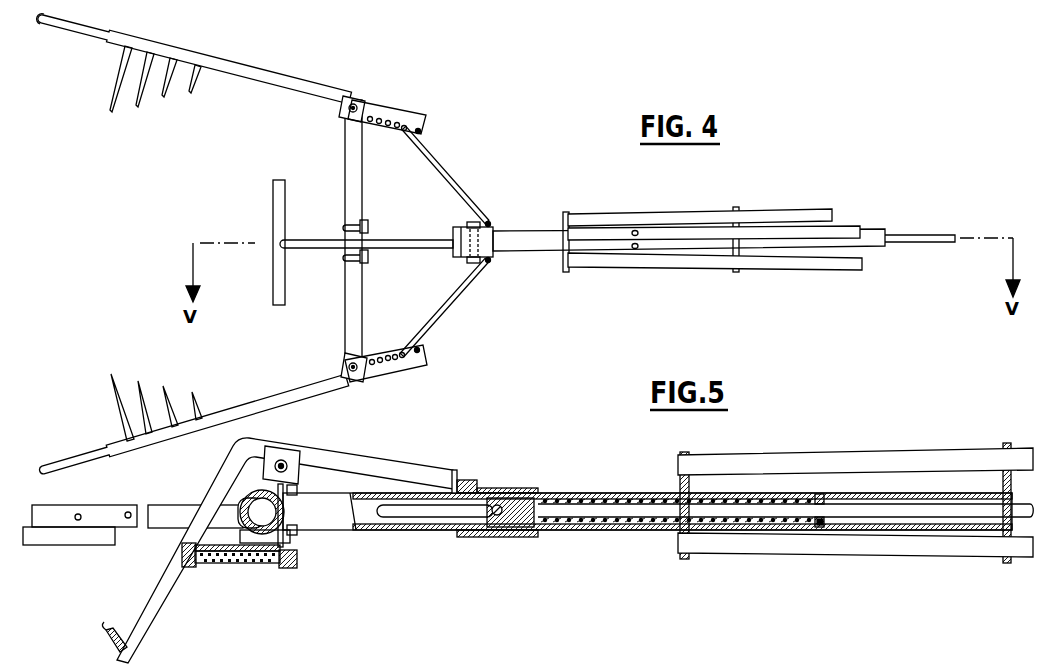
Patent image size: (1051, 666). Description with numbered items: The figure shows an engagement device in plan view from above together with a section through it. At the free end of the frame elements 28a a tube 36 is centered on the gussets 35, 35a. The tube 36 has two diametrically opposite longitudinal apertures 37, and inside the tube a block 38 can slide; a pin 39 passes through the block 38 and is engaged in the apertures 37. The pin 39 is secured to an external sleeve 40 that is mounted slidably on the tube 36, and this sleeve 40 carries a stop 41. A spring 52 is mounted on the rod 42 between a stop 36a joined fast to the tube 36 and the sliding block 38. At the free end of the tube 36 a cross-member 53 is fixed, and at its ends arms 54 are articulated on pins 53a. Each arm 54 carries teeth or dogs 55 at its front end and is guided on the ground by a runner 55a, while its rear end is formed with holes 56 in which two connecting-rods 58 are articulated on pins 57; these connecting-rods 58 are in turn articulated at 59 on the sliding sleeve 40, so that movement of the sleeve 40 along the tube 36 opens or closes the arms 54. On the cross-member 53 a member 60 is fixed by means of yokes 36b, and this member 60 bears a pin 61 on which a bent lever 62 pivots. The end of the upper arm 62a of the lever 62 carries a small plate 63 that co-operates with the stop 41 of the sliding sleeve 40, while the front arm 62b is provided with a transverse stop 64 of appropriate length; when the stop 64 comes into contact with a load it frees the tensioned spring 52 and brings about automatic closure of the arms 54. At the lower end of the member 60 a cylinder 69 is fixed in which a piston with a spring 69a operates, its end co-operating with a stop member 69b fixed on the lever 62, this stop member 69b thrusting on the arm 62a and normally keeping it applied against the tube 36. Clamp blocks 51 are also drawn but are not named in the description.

In FIG. 4, the elements 28a is at (772, 228).
In FIG. 5, the elements 28a is at (900, 465).
In FIG. 5, the gusset 35 is at (686, 455).
In FIG. 5, the gusset 35a is at (1006, 446).
In FIG. 4, the tube 36 is at (528, 243).
In FIG. 5, the tube 36 is at (317, 517).
In FIG. 5, the stop 36a is at (822, 492).
In FIG. 4, the yokes 36b is at (343, 228).
In FIG. 5, the yokes 36b is at (240, 505).
In FIG. 5, the longitudinal apertures 37 is at (420, 512).
In FIG. 5, the block 38 is at (540, 495).
In FIG. 4, the pin 39 is at (478, 227).
In FIG. 5, the pin 39 is at (500, 505).
In FIG. 4, the external sleeve 40 is at (490, 242).
In FIG. 5, the external sleeve 40 is at (483, 531).
In FIG. 4, the stop 41 is at (465, 262).
In FIG. 5, the stop 41 is at (473, 482).
In FIG. 4, the rod 42 is at (925, 238).
In FIG. 5, the rod 42 is at (722, 510).
In FIG. 4, the clamp block 51 is at (369, 226).
In FIG. 5, the spring 52 is at (612, 531).
In FIG. 4, the cross-member 53 is at (350, 193).
In FIG. 5, the cross-member 53 is at (258, 497).
In FIG. 4, the pins 53a is at (347, 120).
In FIG. 4, the arms 54 is at (265, 80).
In FIG. 4, the teeth or dogs 55 is at (192, 82).
In FIG. 4, the runner 55a is at (57, 28).
In FIG. 4, the holes 56 is at (380, 357).
In FIG. 4, the pins 57 is at (403, 352).
In FIG. 4, the connecting-rods 58 is at (450, 180).
In FIG. 4, the articulation 59 is at (492, 224).
In FIG. 5, the member 60 is at (290, 568).
In FIG. 5, the pin 61 is at (284, 462).
In FIG. 5, the bent lever 62 is at (238, 449).
In FIG. 4, the upper arm 62a is at (440, 240).
In FIG. 5, the upper arm 62a is at (375, 465).
In FIG. 5, the front arm 62b is at (153, 600).
In FIG. 4, the small plate 63 is at (460, 252).
In FIG. 5, the small plate 63 is at (455, 470).
In FIG. 4, the transverse stop 64 is at (276, 208).
In FIG. 5, the transverse stop 64 is at (116, 632).
In FIG. 5, the cylinder 69 is at (255, 565).
In FIG. 5, the spring 69a is at (212, 563).
In FIG. 5, the stop member 69b is at (190, 566).